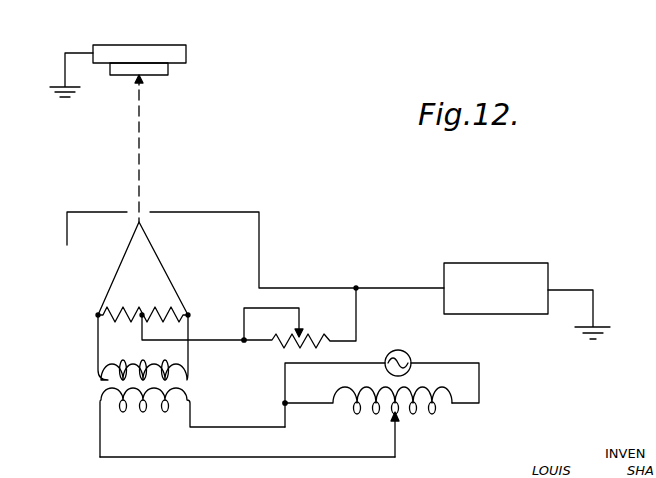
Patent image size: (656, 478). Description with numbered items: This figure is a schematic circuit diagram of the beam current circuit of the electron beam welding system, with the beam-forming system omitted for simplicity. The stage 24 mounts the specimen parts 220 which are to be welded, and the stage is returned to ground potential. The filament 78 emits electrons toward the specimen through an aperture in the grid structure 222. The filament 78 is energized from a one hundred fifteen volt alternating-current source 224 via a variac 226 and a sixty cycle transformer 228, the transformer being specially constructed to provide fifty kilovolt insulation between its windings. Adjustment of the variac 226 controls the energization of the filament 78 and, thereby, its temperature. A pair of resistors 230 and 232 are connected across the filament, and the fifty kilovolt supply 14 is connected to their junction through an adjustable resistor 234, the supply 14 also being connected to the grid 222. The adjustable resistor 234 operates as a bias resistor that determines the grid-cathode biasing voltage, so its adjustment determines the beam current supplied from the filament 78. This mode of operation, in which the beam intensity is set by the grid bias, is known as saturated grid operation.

The 50 kv. supply 14 is at (548, 273).
The stage 24 is at (186, 57).
The filament 78 is at (118, 270).
The specimen parts 220 is at (165, 68).
The grid structure 222 is at (234, 211).
The A.-C. source 224 is at (409, 354).
The variac 226 is at (434, 412).
The transformer 228 is at (108, 380).
The resistor 230 is at (104, 318).
The resistor 232 is at (168, 310).
The adjustable resistor 234 is at (333, 347).